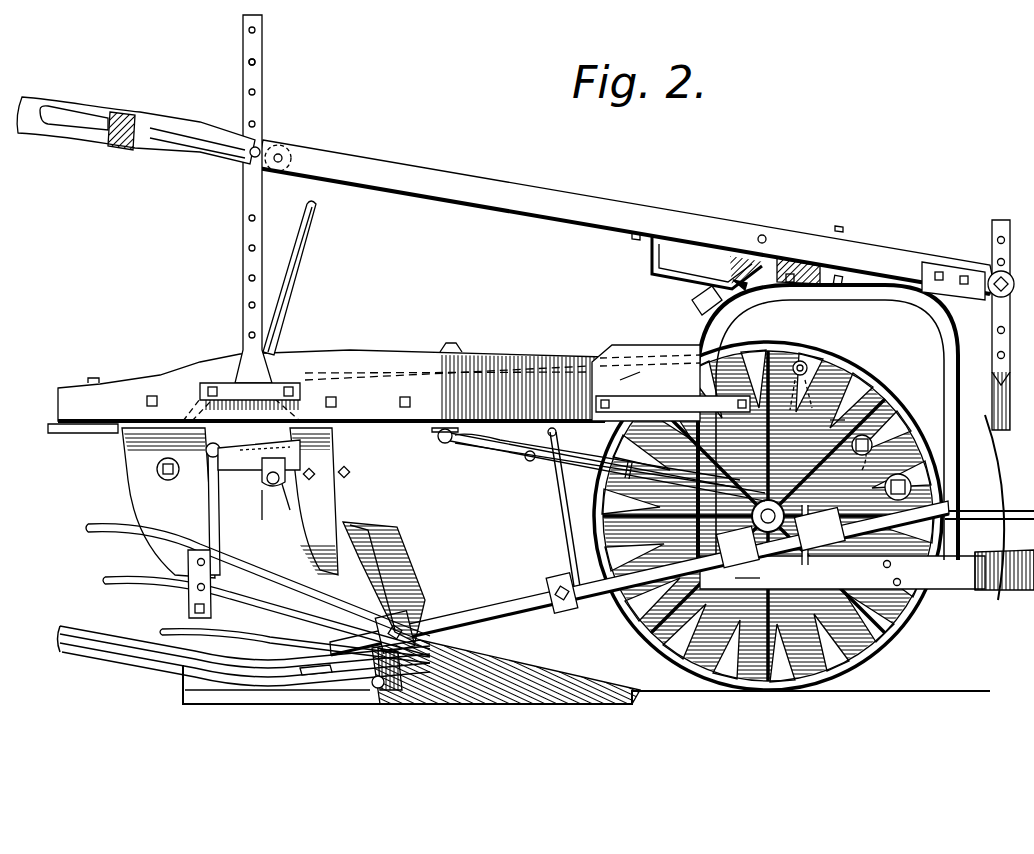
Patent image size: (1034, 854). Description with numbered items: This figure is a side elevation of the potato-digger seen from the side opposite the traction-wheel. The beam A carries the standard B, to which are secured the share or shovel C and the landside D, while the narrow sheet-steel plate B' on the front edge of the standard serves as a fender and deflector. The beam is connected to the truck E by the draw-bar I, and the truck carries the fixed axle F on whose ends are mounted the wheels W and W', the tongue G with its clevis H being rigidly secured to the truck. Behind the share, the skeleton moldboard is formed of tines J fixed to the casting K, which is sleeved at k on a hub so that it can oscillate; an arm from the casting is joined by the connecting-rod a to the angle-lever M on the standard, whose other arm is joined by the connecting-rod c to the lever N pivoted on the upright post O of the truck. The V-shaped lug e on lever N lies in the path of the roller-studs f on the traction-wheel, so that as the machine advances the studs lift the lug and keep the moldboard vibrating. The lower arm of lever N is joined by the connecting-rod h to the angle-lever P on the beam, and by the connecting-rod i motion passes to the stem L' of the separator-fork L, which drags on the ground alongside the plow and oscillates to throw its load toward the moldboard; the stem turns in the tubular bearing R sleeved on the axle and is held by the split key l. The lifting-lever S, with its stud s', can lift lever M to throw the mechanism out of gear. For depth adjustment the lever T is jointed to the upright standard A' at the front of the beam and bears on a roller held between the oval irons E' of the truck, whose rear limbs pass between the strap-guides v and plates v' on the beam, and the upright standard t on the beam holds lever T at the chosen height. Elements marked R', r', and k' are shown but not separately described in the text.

The upright standard t is at (262, 205).
The lifting-lever S is at (292, 242).
The adjusting-lever T is at (574, 200).
The parallel irons E′ is at (955, 305).
The upright standard A′ is at (985, 327).
The connecting-rod c is at (385, 362).
The beam A is at (326, 391).
The strap-guides v is at (612, 392).
The metallic plates v′ is at (633, 367).
The V-shaped lug e is at (795, 391).
The lever N is at (845, 400).
The roller-studs f is at (900, 472).
The supporting-post O is at (864, 464).
The clevis H is at (1020, 506).
The draw-bar I is at (508, 445).
The angle-lever P is at (490, 448).
The pivot bracket r′ is at (440, 445).
The connecting-rod i is at (526, 467).
The connecting-rod h is at (622, 482).
The supporting-stem L′ is at (538, 600).
The tubular bearing-piece R is at (737, 546).
The clamp block R′ is at (819, 528).
The axle F is at (760, 574).
The split key l is at (817, 542).
The truck E is at (842, 572).
The tongue G is at (1004, 570).
The standard B is at (236, 503).
The connecting-rod a is at (225, 493).
The angle-lever M is at (265, 495).
The stud s′ is at (289, 504).
The fender plate B′ is at (395, 556).
The tines J is at (188, 532).
The separator-fork L is at (160, 660).
The casting K is at (410, 700).
The share C is at (506, 672).
The landside D is at (372, 680).
The sleeve k is at (376, 692).
The clip k′ is at (312, 678).
The traction-wheel W is at (945, 657).
The wheel W′ is at (790, 690).